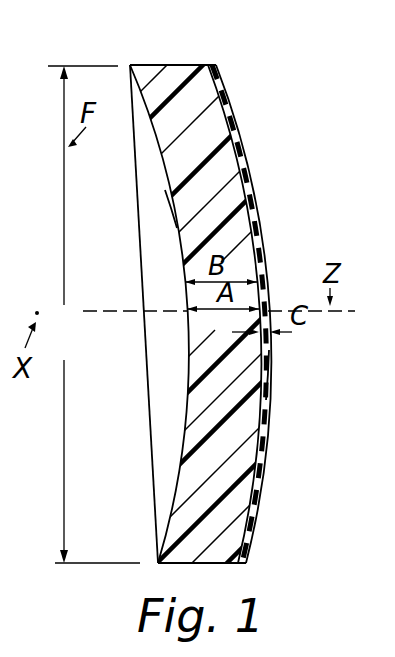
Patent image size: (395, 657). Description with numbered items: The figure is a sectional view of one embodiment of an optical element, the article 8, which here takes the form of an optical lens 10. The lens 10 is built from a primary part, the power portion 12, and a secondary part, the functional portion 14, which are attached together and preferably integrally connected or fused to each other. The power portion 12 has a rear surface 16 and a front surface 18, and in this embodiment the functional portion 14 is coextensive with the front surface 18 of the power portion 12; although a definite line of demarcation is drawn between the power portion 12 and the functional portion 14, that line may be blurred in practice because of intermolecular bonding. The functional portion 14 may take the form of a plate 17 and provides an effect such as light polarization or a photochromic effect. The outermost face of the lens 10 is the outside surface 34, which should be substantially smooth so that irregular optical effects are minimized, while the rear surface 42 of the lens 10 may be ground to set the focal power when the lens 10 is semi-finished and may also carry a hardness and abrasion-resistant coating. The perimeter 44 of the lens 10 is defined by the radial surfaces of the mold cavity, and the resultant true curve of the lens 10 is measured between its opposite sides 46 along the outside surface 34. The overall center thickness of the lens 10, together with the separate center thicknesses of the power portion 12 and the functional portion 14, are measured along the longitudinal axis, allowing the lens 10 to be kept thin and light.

The article 8 is at (117, 77).
The optical lens 10 is at (122, 170).
The power portion 12 is at (163, 78).
The functional portion 14 is at (214, 66).
The rear surface 16 is at (162, 208).
The plate 17 is at (261, 197).
The front surface 18 is at (272, 237).
The outside surface 34 is at (278, 374).
The rear surface 42 is at (186, 376).
The perimeter 44 is at (184, 63).
The opposite sides 46 is at (212, 64).